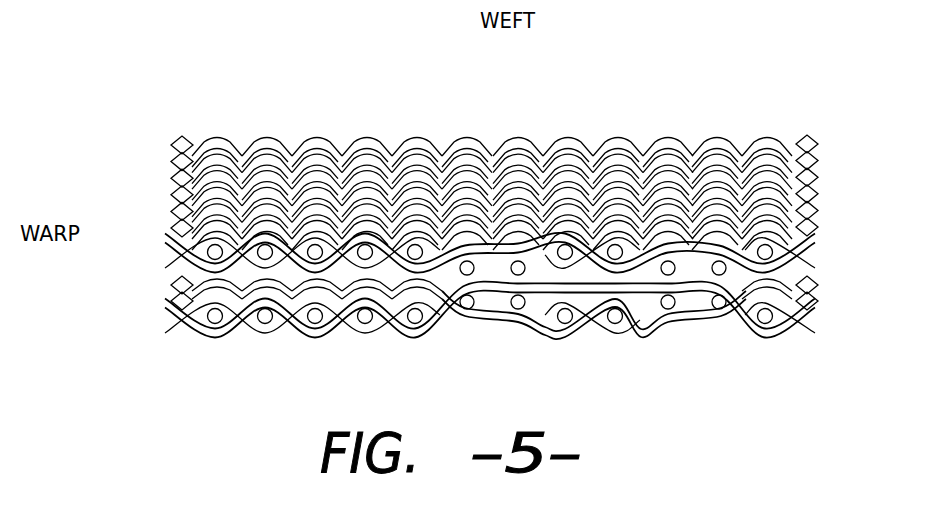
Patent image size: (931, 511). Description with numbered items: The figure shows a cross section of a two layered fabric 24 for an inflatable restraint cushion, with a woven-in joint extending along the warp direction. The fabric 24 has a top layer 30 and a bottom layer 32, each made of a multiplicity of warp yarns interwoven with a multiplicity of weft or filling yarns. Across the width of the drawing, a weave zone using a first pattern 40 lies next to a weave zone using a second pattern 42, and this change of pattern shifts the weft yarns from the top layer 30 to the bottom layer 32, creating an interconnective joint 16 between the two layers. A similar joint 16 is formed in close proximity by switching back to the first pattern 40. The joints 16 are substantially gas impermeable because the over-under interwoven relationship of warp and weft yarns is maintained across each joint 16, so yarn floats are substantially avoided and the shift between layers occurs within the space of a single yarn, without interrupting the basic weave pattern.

The interconnective joint 16 is at (499, 338).
The two layered fabric 24 is at (830, 140).
The top layer 30 is at (158, 145).
The bottom layer 32 is at (158, 275).
The first pattern 40 is at (493, 121).
The second pattern 42 is at (693, 121).